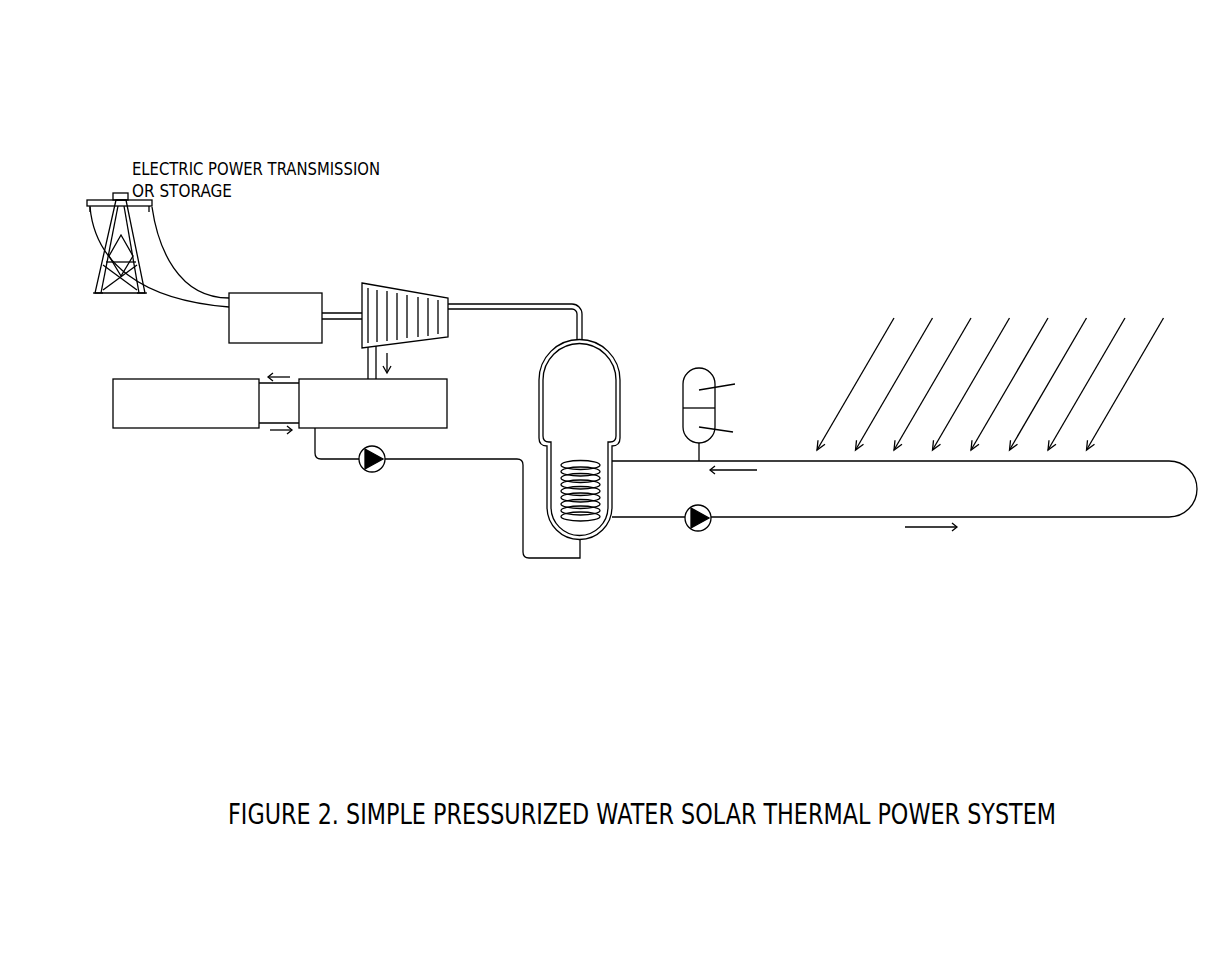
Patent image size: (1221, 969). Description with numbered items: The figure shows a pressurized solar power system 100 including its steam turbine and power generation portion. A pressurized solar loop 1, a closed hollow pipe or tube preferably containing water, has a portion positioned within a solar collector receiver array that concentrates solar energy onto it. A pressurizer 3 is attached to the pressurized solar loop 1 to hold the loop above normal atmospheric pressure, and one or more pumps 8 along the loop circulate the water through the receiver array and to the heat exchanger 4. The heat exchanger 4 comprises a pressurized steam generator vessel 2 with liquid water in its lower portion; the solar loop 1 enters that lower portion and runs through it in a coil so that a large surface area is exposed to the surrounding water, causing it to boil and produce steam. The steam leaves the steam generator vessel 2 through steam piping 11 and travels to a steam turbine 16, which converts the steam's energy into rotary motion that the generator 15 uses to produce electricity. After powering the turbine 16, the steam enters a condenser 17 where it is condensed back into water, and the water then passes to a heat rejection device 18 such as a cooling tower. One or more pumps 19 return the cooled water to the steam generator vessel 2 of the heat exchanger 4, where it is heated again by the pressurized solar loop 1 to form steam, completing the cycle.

The pressurized solar loop 1 is at (1148, 456).
The steam generator vessel 2 is at (595, 421).
The pressurizer 3 is at (706, 366).
The heat exchanger 4 is at (568, 522).
The pump 8 is at (710, 530).
The steam piping 11 is at (460, 302).
The generator 15 is at (325, 292).
The steam turbine 16 is at (420, 293).
The condenser 17 is at (425, 388).
The heat rejection device 18 is at (170, 428).
The pump 19 is at (362, 470).
The pressurized solar power system 100 is at (1012, 70).